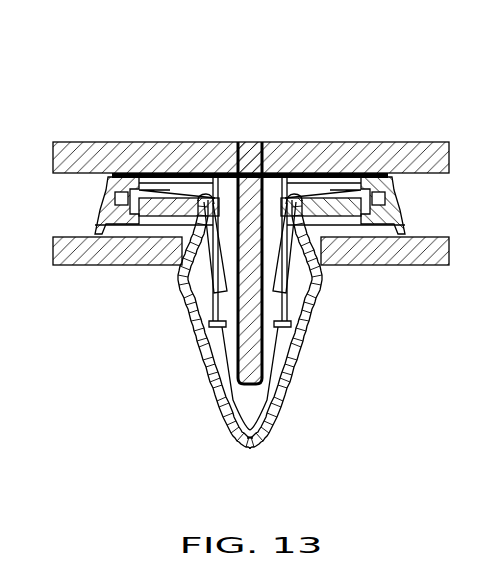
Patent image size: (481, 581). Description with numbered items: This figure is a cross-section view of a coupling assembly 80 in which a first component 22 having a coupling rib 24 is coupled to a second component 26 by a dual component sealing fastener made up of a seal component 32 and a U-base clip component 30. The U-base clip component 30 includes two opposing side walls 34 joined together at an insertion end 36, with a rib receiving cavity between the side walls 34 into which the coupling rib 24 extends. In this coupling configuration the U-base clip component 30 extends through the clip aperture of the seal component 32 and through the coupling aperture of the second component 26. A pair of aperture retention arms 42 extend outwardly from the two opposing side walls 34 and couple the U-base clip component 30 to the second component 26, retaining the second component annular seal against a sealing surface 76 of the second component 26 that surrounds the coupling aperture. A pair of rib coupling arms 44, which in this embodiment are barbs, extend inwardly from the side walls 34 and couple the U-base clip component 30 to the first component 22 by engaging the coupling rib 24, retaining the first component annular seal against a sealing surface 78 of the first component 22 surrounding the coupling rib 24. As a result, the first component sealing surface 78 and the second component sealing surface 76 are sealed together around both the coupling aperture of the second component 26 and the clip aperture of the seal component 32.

The coupling assembly 80 is at (335, 86).
The first component 22 is at (201, 133).
The coupling rib 24 is at (252, 200).
The second component 26 is at (407, 260).
The U-base clip component 30 is at (250, 342).
The seal component 32 is at (406, 191).
The opposing side walls 34 is at (207, 337).
The insertion end 36 is at (243, 444).
The aperture retention arms 42 is at (222, 273).
The rib coupling arms 44 is at (228, 288).
The sealing surface of the second component 76 is at (83, 235).
The sealing surface of the first component 78 is at (88, 198).